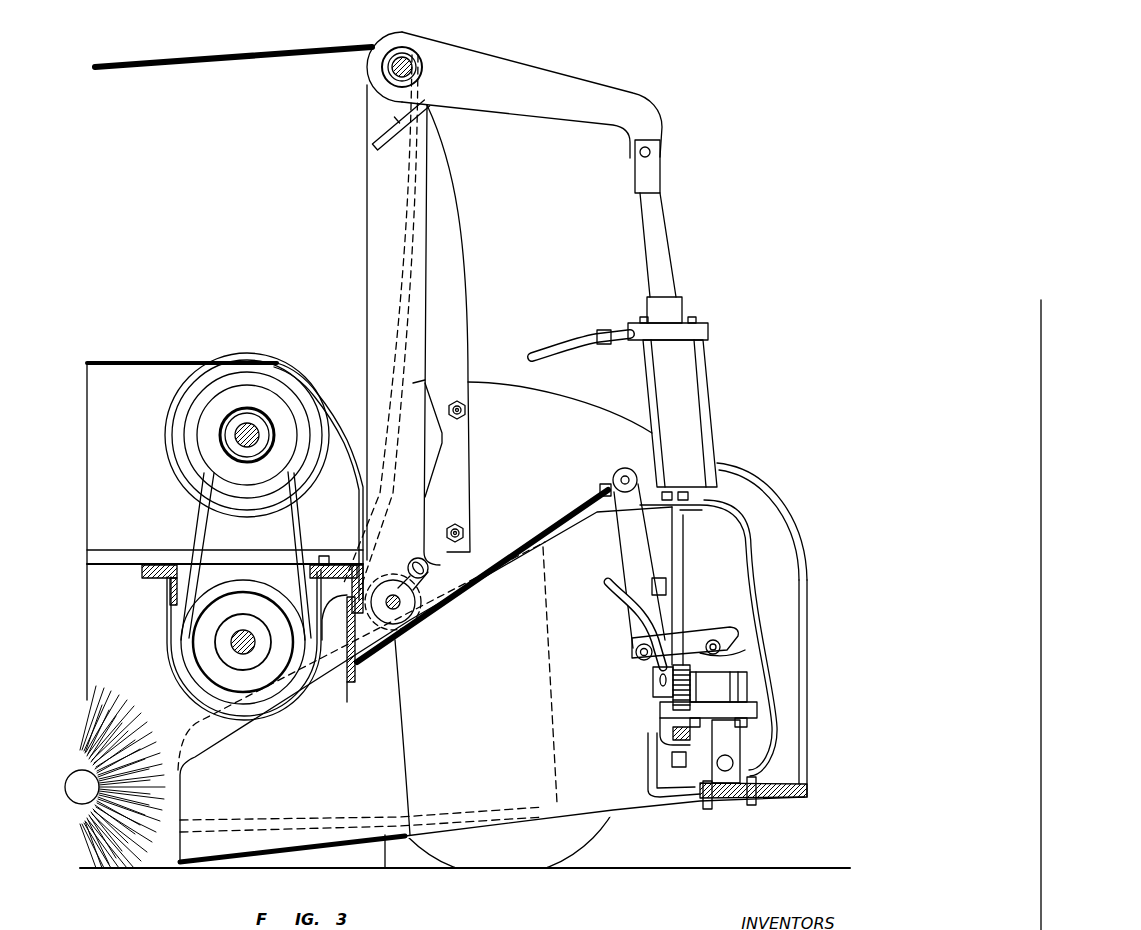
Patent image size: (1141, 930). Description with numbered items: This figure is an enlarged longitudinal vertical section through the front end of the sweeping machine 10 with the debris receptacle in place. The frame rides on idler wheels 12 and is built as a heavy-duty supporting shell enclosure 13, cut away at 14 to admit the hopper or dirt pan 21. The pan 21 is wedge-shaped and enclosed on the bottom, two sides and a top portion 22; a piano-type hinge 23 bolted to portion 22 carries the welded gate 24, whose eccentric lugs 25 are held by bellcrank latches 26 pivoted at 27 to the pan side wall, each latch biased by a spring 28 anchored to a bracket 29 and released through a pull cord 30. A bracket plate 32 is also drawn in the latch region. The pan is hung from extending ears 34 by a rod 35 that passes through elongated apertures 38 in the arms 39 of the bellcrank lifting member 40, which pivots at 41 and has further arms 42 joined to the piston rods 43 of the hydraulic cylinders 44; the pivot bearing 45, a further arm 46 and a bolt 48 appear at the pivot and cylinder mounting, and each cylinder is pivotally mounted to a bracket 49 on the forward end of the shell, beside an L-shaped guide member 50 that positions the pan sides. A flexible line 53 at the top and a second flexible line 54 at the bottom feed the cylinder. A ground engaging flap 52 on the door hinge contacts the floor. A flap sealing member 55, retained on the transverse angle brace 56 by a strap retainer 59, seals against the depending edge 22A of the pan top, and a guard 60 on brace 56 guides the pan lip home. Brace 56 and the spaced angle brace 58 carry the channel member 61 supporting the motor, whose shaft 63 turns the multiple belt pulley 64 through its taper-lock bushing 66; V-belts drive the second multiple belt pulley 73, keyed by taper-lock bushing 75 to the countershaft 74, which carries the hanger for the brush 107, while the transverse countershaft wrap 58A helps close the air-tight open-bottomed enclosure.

The machine 10 is at (776, 493).
The idler wheels 12 is at (502, 860).
The supporting shell enclosure 13 is at (150, 362).
The cut away 14 is at (805, 764).
The hopper or dirt pan 21 is at (572, 806).
The portion of the top 22 is at (567, 528).
The depending edge 22A is at (351, 678).
The piano-type hinge 23 is at (690, 500).
The gate 24 is at (749, 554).
The eccentric lugs 25 is at (746, 650).
The bellcrank latches 26 is at (621, 541).
The pivot 27 is at (637, 659).
The spring 28 is at (672, 733).
The bracket 29 is at (671, 757).
The pull cord 30 is at (257, 56).
The bracket plate 32 is at (722, 632).
The extending ears 34 is at (409, 624).
The rod 35 is at (398, 612).
The elongated apertures 38 is at (438, 596).
The arms 39 is at (369, 283).
The bellcrank lifting member 40 is at (537, 71).
The pivot 41 is at (402, 46).
The arms 42 is at (487, 60).
The piston rods 43 is at (668, 239).
The hydraulic cylinders 44 is at (648, 382).
The bearing 45 is at (414, 53).
The arm 46 is at (464, 289).
The bolt 48 is at (735, 806).
The bracket 49 is at (744, 805).
The L-shaped guide member 50 is at (651, 775).
The ground engaging flap 52 is at (376, 858).
The flexible line 53 is at (570, 346).
The second flexible line 54 is at (620, 590).
The flap sealing member 55 is at (347, 702).
The transverse angle support or brace 56 is at (342, 566).
The spaced angle brace or support 58 is at (167, 594).
The transverse countershaft wrap 58A is at (277, 719).
The strap retainer 59 is at (343, 617).
The guard 60 is at (433, 454).
The channel member 61 is at (137, 553).
The motor shaft 63 is at (236, 433).
The multiple belt pulley 64 is at (208, 430).
The taper-lock bushing 66 is at (224, 440).
The second multiple belt pulley 73 is at (238, 588).
The countershaft 74 is at (231, 642).
The taper-lock bushing 75 is at (216, 660).
The brush 107 is at (143, 726).